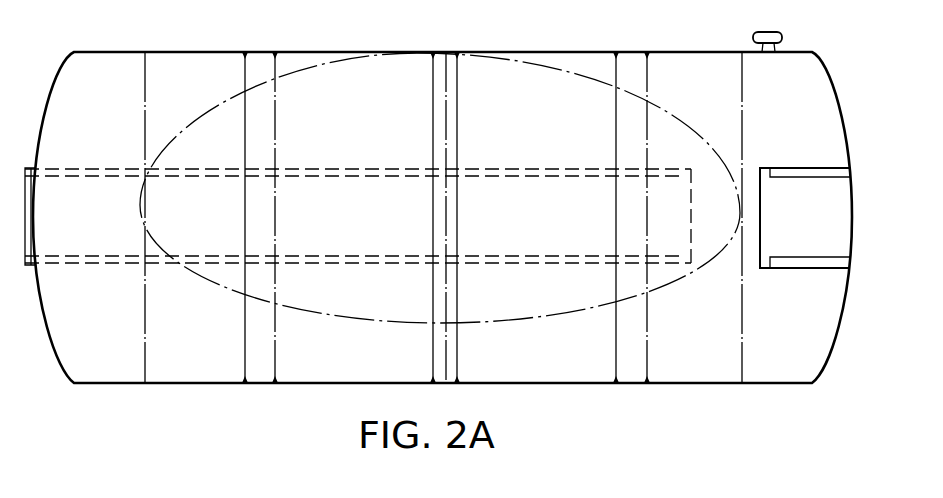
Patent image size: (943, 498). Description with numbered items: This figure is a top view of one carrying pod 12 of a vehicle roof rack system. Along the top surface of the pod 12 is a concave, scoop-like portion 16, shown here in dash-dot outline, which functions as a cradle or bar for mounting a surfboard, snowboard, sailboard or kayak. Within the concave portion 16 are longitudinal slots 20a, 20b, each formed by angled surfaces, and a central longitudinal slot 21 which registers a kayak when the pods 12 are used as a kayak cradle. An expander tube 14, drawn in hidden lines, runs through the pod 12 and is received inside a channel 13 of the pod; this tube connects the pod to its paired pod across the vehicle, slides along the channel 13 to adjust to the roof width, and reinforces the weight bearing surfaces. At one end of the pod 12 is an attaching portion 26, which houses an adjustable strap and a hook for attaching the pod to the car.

The carrying pod 12 is at (127, 51).
The channel 13 is at (53, 172).
The expander tube 14 is at (31, 266).
The concave scoop-like portion 16 is at (338, 135).
The longitudinal slot 20a is at (244, 383).
The longitudinal slot 20b is at (647, 383).
The central longitudinal slot 21 is at (448, 83).
The attaching portion 26 is at (808, 203).